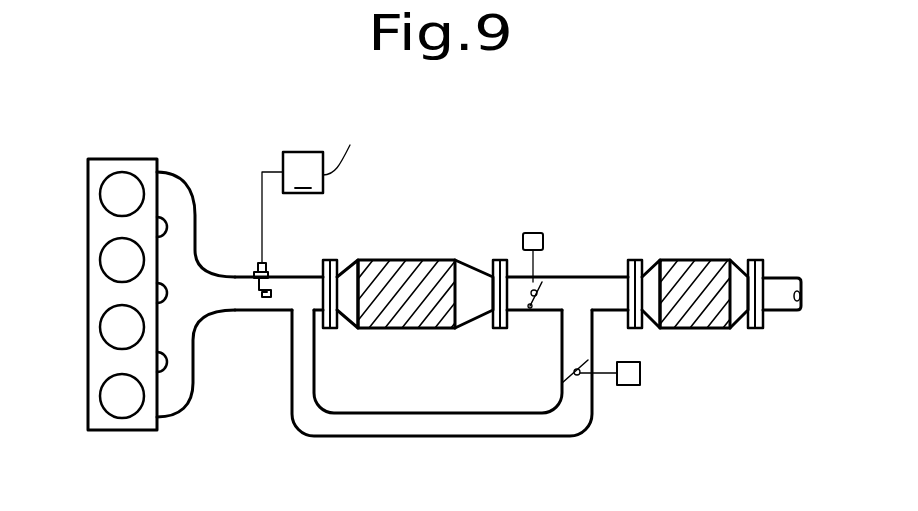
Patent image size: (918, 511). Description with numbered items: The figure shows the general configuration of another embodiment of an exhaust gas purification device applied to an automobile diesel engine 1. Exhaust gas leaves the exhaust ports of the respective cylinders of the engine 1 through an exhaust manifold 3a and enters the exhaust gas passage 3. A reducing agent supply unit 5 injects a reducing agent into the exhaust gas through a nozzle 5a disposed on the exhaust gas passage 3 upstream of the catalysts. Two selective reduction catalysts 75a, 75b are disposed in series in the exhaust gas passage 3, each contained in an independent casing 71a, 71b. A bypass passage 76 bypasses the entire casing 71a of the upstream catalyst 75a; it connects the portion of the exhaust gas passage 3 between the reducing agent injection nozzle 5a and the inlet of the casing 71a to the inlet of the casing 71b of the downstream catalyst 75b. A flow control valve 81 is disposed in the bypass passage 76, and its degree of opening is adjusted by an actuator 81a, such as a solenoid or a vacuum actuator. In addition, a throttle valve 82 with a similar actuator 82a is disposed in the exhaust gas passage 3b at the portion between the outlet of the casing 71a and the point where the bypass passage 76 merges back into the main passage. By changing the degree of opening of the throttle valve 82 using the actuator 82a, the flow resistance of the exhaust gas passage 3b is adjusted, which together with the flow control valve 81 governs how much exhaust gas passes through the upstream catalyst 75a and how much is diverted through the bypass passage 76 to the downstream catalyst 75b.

The automobile diesel engine 1 is at (99, 133).
The exhaust manifold 3a is at (173, 400).
The exhaust gas passage 3 is at (308, 290).
The exhaust gas passage 3b is at (586, 291).
The reducing agent supply unit 5 is at (417, 155).
The nozzle 5a is at (262, 299).
The selective reduction catalyst 75a is at (406, 262).
The casing 71a is at (473, 263).
The selective reduction catalyst 75b is at (673, 262).
The casing 71b is at (739, 263).
The bypass passage 76 is at (450, 422).
The flow control valve 81 is at (563, 378).
The actuator 81a is at (628, 388).
The throttle valve 82 is at (532, 311).
The actuator 82a is at (546, 234).